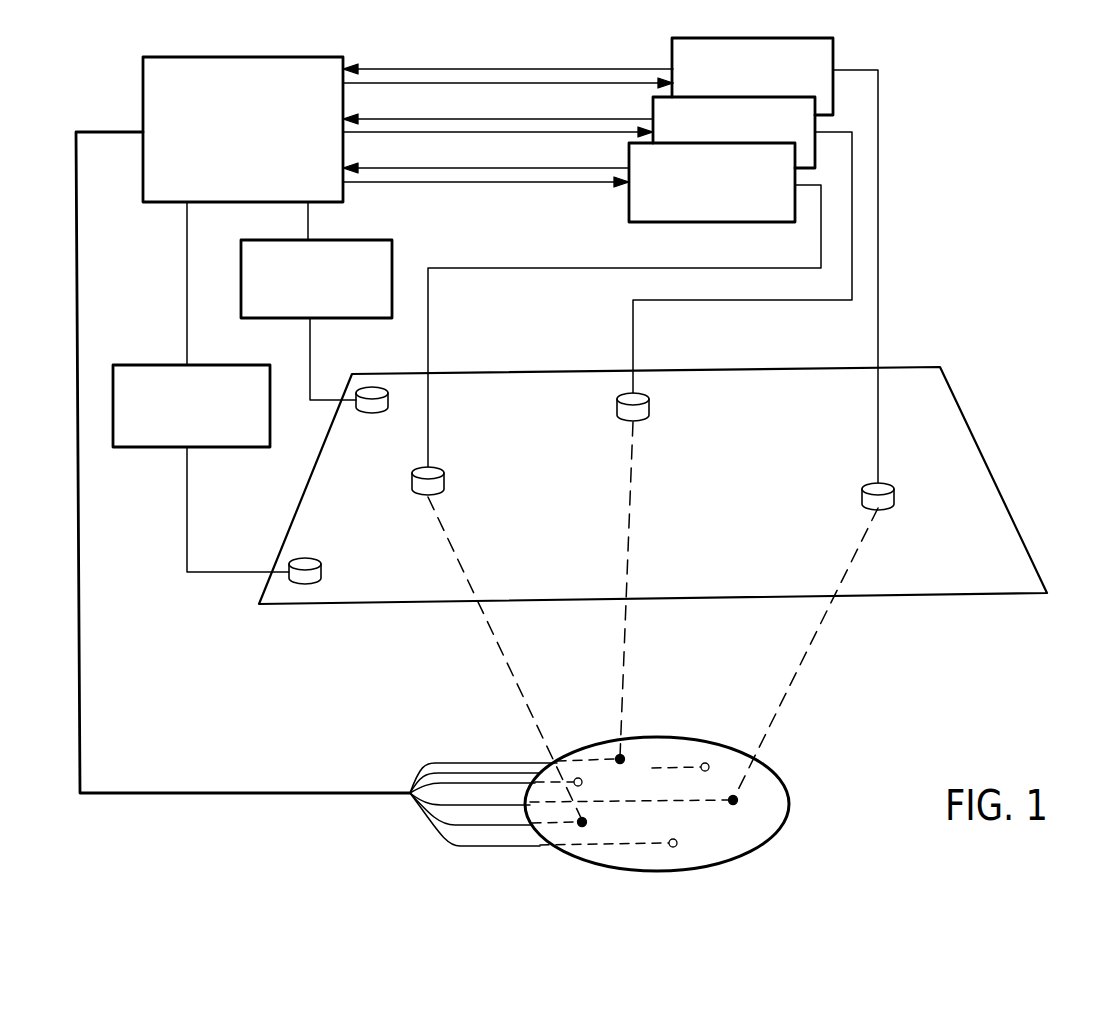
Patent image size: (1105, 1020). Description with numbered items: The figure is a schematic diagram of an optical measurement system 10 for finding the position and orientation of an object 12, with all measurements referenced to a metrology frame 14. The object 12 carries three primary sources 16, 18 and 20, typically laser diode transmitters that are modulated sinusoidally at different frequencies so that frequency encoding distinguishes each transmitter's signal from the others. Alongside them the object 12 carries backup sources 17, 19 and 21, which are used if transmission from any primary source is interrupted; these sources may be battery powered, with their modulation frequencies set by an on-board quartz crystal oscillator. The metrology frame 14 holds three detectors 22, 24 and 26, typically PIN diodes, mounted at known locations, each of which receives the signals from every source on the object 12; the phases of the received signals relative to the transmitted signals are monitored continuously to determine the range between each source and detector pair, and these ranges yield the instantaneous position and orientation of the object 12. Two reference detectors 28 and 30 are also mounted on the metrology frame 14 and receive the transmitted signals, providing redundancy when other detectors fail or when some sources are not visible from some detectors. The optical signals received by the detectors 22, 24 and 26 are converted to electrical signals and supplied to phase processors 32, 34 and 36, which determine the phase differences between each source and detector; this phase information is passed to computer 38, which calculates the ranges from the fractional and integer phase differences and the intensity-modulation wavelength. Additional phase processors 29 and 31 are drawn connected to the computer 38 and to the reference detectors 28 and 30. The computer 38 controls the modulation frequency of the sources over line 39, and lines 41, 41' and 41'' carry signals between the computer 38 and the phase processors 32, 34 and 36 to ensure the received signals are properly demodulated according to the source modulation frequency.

The optical measurement system 10 is at (987, 215).
The object 12 is at (676, 722).
The metrology frame 14 is at (990, 462).
The primary source S1 16 is at (737, 804).
The backup source Sb1 17 is at (677, 845).
The primary source S2 18 is at (616, 756).
The backup source Sb2 19 is at (708, 764).
The primary source S3 20 is at (582, 826).
The backup source Sb3 21 is at (576, 778).
The detector D1 22 is at (865, 490).
The detector D2 24 is at (618, 401).
The detector D3 26 is at (440, 473).
The reference detector Dref1 28 is at (365, 387).
The phase processor 29 is at (400, 252).
The reference detector Dref2 30 is at (299, 558).
The phase processor 31 is at (143, 447).
The phase processor 32 is at (770, 38).
The phase processor 34 is at (720, 97).
The phase processor 36 is at (706, 143).
The computer 38 is at (143, 90).
The line 39 is at (208, 793).
The line 41 is at (508, 57).
The line 41' is at (498, 81).
The line 41'' is at (486, 191).